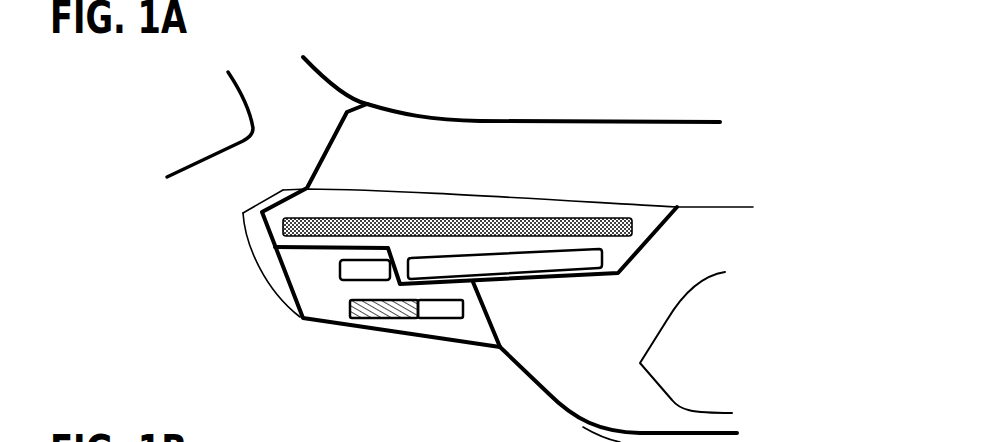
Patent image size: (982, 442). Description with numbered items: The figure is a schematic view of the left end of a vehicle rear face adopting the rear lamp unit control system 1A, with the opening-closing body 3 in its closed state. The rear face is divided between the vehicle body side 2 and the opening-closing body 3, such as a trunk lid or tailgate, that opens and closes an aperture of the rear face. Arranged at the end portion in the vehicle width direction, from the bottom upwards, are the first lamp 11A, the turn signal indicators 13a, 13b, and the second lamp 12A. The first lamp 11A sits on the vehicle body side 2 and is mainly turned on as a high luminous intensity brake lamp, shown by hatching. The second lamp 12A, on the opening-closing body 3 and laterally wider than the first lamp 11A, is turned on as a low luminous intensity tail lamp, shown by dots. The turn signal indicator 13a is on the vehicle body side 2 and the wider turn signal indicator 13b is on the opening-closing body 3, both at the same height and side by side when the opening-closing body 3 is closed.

The rear lamp unit control system 1A is at (490, 99).
The vehicle body side 2 is at (268, 108).
The opening-closing body 3 is at (583, 143).
The second lamp 12A is at (283, 230).
The turn signal indicator 13a is at (340, 270).
The turn signal indicator 13b is at (417, 266).
The first lamp 11A is at (350, 308).